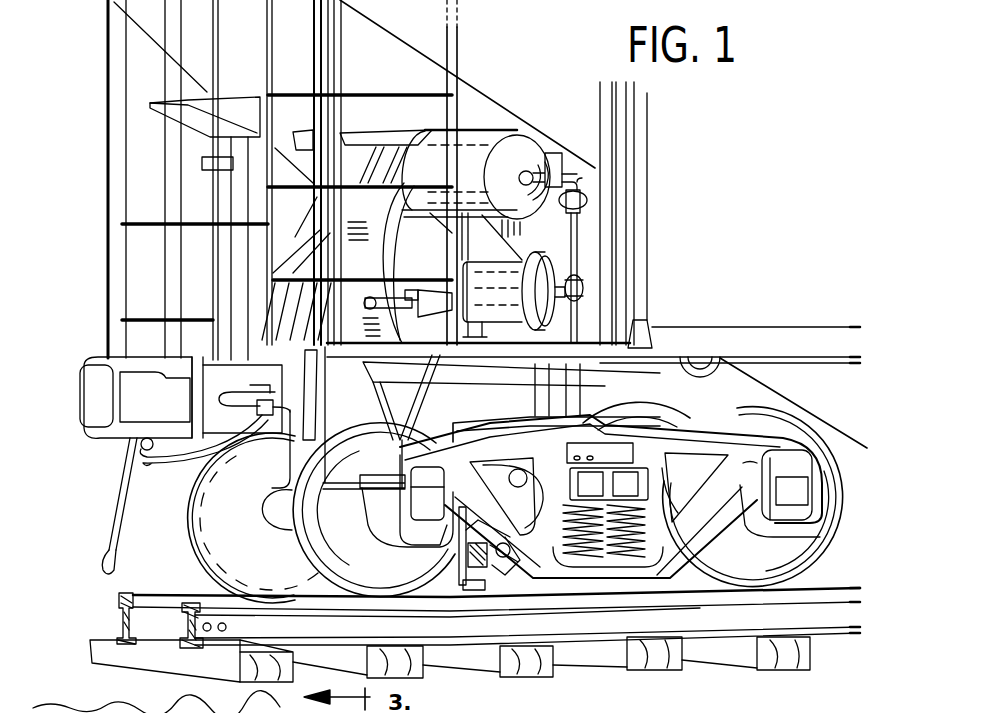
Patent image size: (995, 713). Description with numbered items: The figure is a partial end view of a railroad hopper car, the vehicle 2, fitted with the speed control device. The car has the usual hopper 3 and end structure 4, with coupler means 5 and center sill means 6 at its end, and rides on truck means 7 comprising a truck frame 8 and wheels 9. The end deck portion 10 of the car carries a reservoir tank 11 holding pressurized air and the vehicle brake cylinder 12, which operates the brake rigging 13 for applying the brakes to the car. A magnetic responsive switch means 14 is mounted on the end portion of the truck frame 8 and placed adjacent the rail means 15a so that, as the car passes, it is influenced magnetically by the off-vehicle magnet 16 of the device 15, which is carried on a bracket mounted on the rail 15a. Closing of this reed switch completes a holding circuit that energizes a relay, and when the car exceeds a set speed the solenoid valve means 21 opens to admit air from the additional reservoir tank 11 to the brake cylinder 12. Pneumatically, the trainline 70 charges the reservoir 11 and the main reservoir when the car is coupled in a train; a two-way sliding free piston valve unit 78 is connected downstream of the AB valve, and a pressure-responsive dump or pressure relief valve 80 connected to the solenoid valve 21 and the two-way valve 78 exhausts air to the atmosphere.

The vehicle 2 is at (107, 160).
The hopper 3 is at (405, 72).
The end structure 4 is at (108, 67).
The coupler means 5 is at (78, 437).
The center sill means 6 is at (182, 358).
The truck means 7 is at (647, 398).
The truck frame 8 is at (690, 427).
The wheels 9 is at (757, 413).
The end deck portion 10 is at (557, 345).
The reservoir tank 11 is at (480, 147).
The brake cylinder 12 is at (500, 280).
The brake rigging 13 is at (378, 244).
The magnetic responsive switch means 14 is at (500, 580).
The device 15 is at (486, 596).
The rail means 15a is at (580, 638).
The magnet 16 is at (183, 622).
The solenoid valve means 21 is at (553, 152).
The line 70 is at (110, 533).
The two-way valve unit 78 is at (583, 286).
The pressure relief valve 80 is at (590, 198).